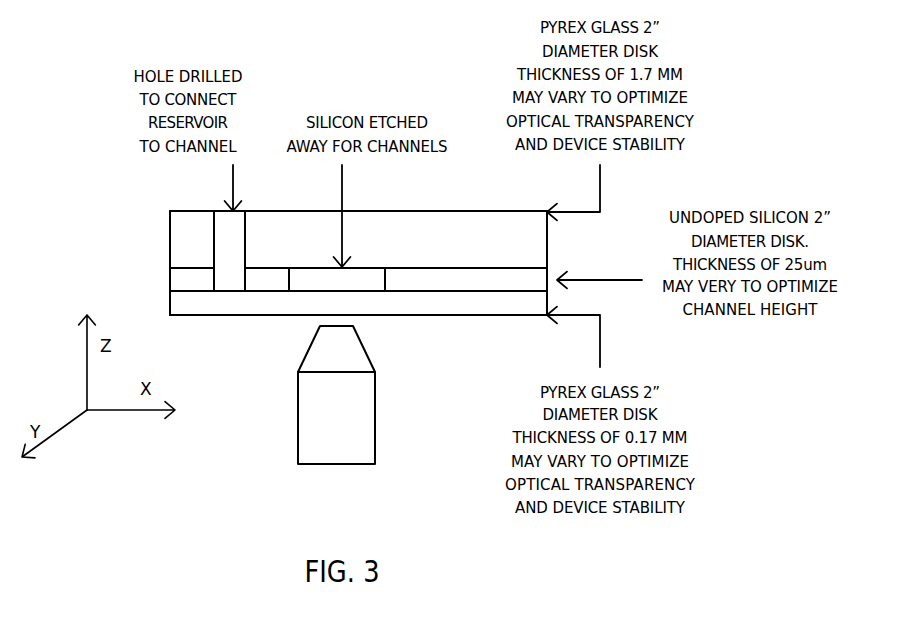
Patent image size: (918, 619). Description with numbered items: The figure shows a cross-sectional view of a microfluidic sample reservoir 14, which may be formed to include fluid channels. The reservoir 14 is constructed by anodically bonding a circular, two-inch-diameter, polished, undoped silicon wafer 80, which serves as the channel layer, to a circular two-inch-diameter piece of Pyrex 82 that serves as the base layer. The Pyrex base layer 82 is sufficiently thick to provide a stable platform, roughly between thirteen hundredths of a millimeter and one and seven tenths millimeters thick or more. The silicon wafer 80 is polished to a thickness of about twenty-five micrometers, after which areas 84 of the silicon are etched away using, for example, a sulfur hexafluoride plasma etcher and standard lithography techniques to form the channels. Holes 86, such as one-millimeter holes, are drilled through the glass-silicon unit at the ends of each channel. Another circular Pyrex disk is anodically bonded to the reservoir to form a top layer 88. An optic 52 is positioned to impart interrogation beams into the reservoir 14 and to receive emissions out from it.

The sample reservoir 14 is at (351, 270).
The optic 52 is at (273, 423).
The undoped silicon wafer 80 is at (628, 277).
The Pyrex base layer 82 is at (403, 227).
The etched areas of silicon 84 is at (313, 280).
The holes 86 is at (225, 232).
The top layer 88 is at (412, 315).